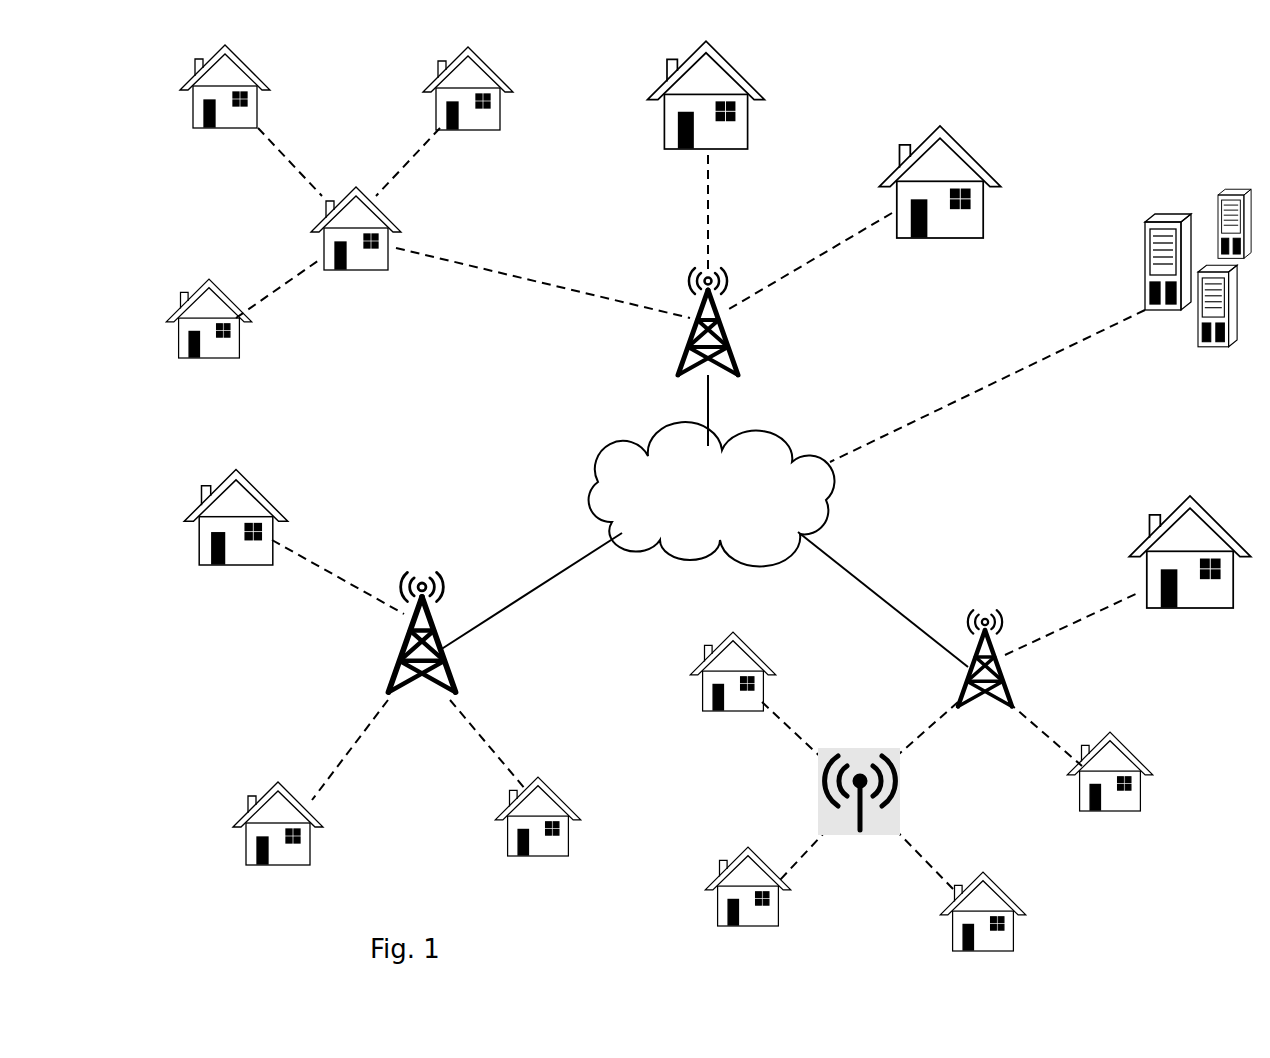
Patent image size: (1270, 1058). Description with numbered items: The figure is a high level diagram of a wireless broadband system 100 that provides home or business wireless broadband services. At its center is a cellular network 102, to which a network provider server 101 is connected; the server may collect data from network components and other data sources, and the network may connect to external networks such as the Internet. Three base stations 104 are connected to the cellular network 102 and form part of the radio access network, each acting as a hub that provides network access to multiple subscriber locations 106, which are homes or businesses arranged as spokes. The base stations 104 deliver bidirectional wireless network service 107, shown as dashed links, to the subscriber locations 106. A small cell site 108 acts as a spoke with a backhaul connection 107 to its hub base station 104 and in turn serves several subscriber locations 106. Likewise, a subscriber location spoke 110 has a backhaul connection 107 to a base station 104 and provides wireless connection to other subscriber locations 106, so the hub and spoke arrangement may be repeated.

The wireless broadband system 100 is at (205, 660).
The network provider server 101 is at (1152, 218).
The cellular network 102 is at (704, 521).
The base station 104 is at (736, 330).
The subscriber location 106 is at (262, 102).
The wireless network service 107 is at (714, 240).
The small cell site 108 is at (852, 832).
The subscriber location spoke 110 is at (346, 272).